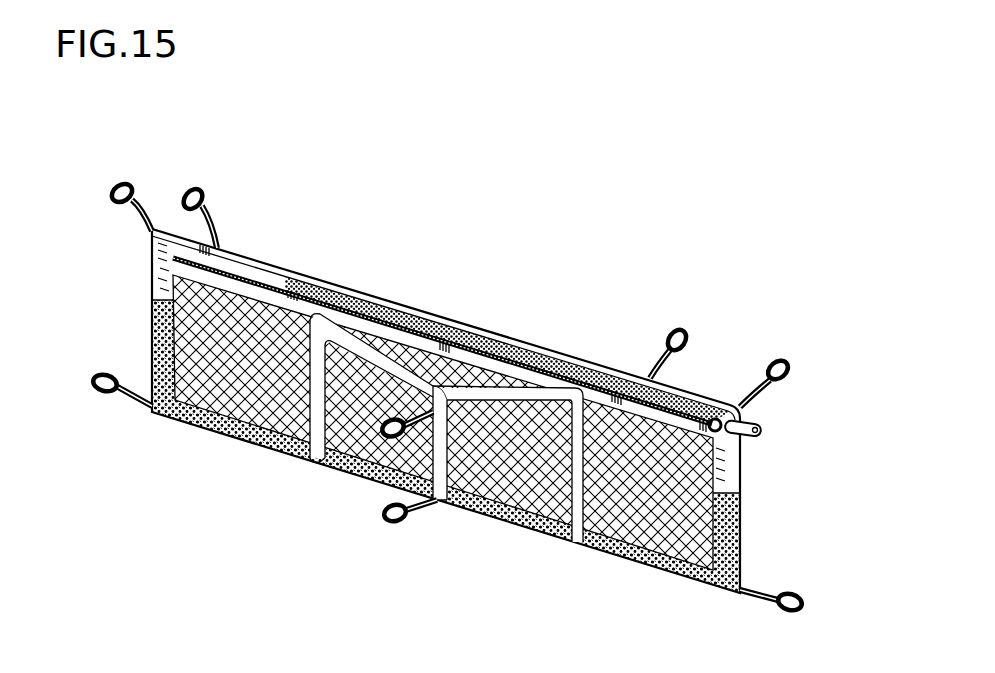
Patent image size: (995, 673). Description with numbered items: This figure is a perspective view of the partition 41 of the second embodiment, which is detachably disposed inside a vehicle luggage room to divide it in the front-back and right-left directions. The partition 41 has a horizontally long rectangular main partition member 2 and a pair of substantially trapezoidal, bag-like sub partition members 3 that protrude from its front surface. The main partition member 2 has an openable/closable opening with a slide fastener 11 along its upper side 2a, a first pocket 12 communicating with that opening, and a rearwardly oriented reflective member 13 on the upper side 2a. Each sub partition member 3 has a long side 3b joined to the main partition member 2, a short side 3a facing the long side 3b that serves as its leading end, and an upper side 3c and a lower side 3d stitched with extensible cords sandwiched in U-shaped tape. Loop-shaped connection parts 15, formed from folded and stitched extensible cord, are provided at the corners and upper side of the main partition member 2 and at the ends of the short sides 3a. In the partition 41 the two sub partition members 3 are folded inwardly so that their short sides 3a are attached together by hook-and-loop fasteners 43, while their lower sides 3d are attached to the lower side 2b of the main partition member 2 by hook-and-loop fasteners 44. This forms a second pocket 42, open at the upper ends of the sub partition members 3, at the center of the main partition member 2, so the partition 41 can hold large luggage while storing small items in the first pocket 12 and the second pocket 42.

The main partition member 2 is at (293, 259).
The upper side 2a is at (435, 313).
The lower side 2b is at (275, 447).
The sub partition member 3 is at (415, 434).
The short side 3a is at (444, 487).
The long side 3b is at (318, 400).
The upper side 3c is at (370, 353).
The lower side 3d is at (342, 470).
The slide fastener 11 is at (744, 382).
The first pocket 12 is at (697, 412).
The reflective member 13 is at (552, 363).
The connection part 15 is at (99, 355).
The partition 41 is at (243, 205).
The second pocket 42 is at (465, 373).
The hook-and-loop fastener 43 is at (437, 502).
The hook-and-loop fastener 44 is at (383, 483).